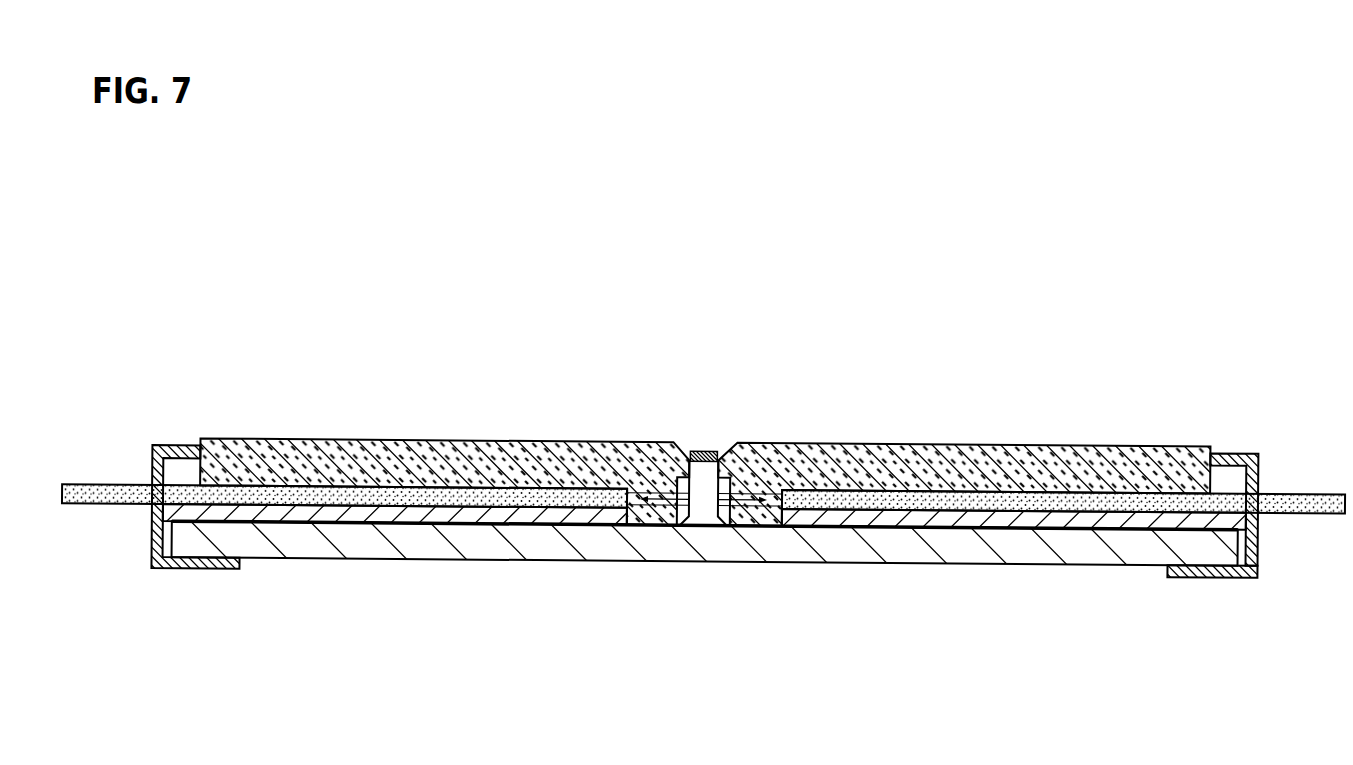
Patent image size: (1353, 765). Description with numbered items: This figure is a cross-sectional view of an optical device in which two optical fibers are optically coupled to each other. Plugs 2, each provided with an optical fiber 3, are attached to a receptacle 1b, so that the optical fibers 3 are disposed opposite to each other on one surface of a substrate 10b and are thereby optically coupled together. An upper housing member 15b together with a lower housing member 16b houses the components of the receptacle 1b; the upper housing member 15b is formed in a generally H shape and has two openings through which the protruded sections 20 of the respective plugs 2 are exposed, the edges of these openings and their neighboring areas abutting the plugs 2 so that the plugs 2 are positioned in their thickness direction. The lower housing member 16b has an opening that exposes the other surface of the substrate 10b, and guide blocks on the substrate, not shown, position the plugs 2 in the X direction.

The optical fiber 3 is at (90, 483).
The plug 2 is at (520, 440).
The protruded section 20 is at (696, 442).
The receptacle 1b is at (704, 442).
The substrate 10b is at (712, 562).
The upper housing member 15b is at (1226, 453).
The lower housing member 16b is at (1213, 578).